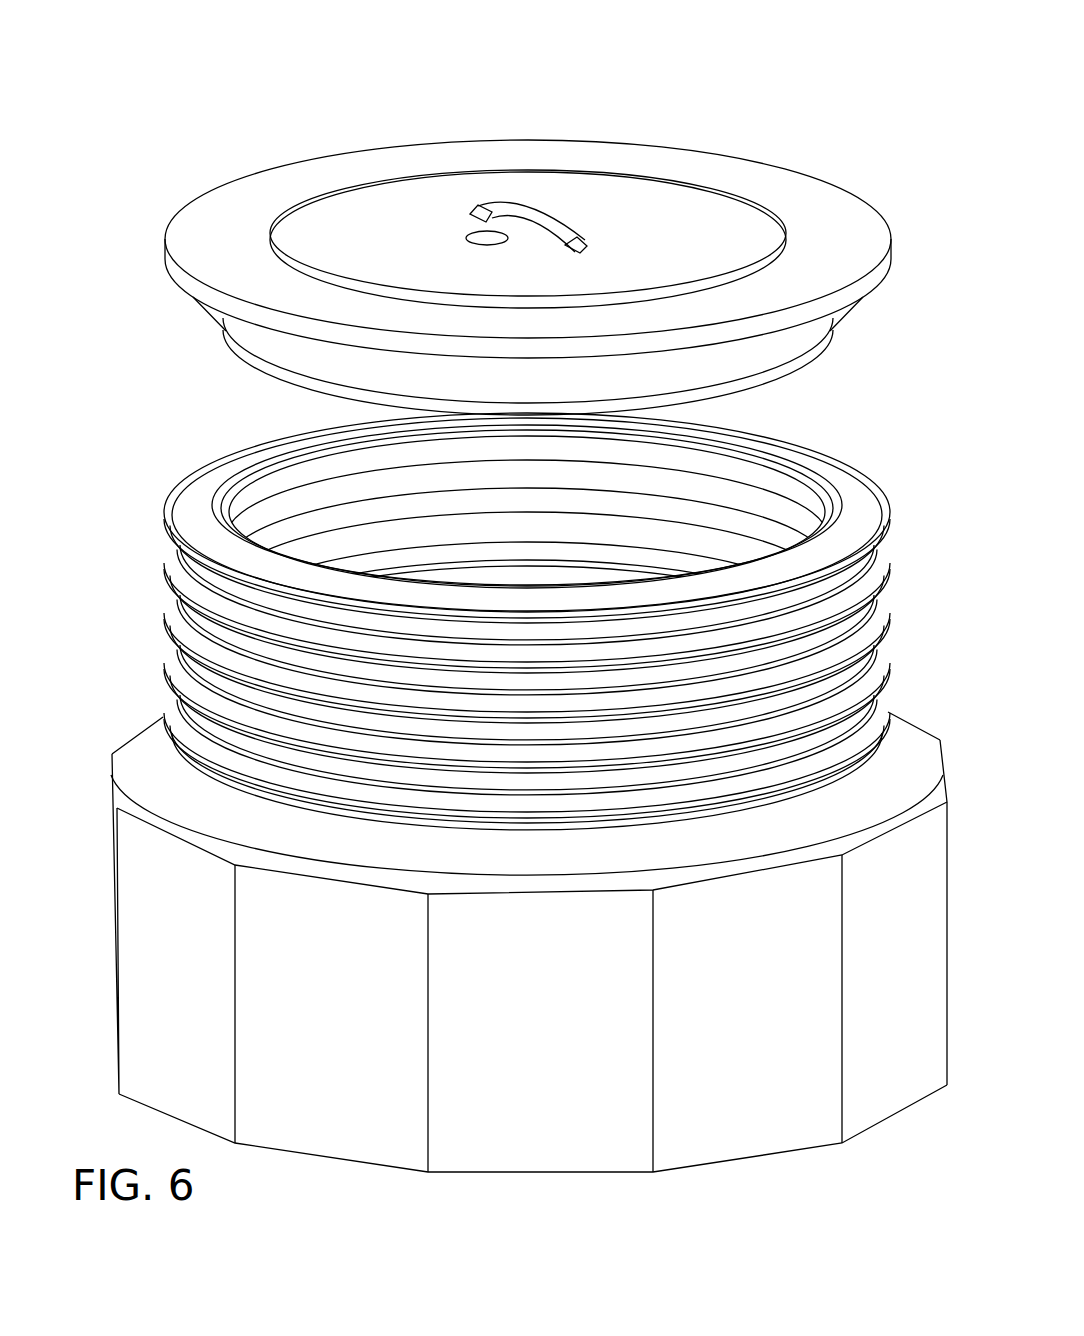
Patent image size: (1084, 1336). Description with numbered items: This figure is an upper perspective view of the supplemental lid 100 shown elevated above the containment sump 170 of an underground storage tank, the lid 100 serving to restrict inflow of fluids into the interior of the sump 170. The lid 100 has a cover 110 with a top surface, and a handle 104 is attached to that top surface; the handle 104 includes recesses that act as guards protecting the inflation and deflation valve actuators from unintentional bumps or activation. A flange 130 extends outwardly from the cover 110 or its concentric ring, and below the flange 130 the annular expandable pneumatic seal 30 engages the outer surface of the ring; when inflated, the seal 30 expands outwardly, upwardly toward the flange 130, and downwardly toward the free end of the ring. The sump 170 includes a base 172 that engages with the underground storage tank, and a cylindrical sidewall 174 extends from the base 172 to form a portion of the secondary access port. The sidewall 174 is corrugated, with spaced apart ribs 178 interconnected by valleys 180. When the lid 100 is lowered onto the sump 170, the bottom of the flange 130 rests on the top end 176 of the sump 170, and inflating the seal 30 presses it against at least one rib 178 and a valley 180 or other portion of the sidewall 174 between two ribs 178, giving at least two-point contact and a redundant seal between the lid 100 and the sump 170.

The supplemental lid 100 is at (700, 69).
The pneumatic seal 30 is at (197, 325).
The flange 130 is at (202, 212).
The cover 110 is at (380, 195).
The handle 104 is at (527, 207).
The containment sump 170 is at (873, 420).
The base 172 is at (583, 1148).
The cylindrical sidewall 174 is at (128, 637).
The top end 176 is at (200, 511).
The ribs 178 is at (290, 497).
The valleys 180 is at (314, 469).